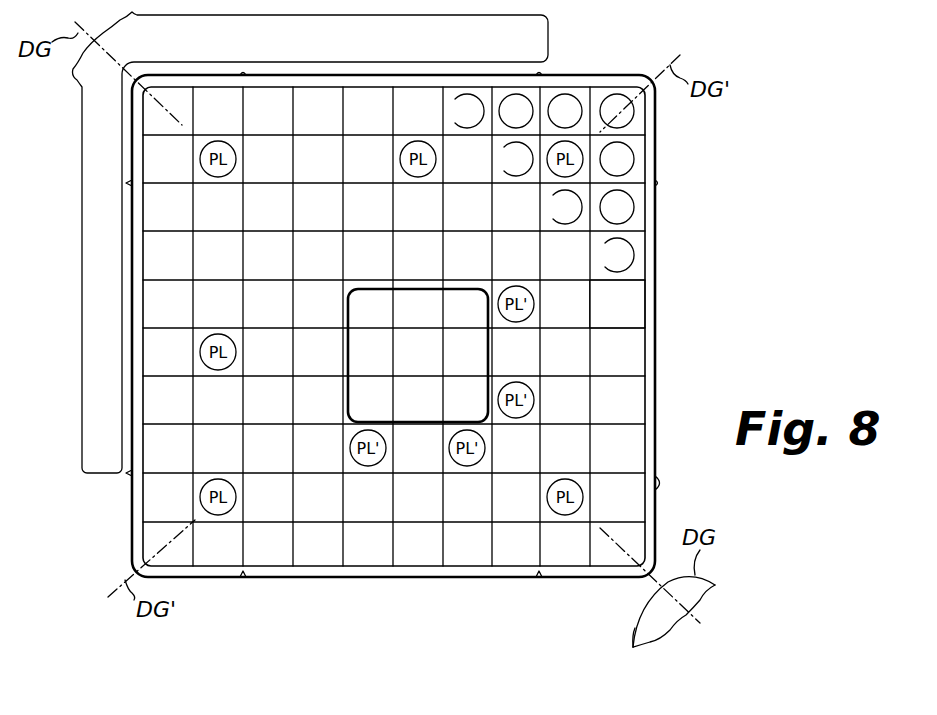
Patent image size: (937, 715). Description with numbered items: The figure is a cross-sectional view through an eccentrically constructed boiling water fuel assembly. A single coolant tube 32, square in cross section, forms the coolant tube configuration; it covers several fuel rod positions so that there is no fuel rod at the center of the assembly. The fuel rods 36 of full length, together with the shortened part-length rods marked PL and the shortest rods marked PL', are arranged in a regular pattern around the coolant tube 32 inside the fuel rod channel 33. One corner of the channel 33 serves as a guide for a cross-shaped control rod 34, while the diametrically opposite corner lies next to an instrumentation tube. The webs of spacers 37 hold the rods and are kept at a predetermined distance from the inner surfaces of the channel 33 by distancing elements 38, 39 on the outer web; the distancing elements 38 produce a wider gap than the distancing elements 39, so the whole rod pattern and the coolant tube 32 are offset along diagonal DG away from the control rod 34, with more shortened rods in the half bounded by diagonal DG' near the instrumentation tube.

The coolant tube 32 is at (463, 357).
The fuel rod channel 33 is at (655, 347).
The cross-shaped control rod 34 is at (537, 33).
The fuel rods of full length 36 is at (637, 117).
The webs of spacers 37 is at (644, 303).
The distancing elements 38 is at (548, 75).
The distancing elements 39 is at (649, 483).